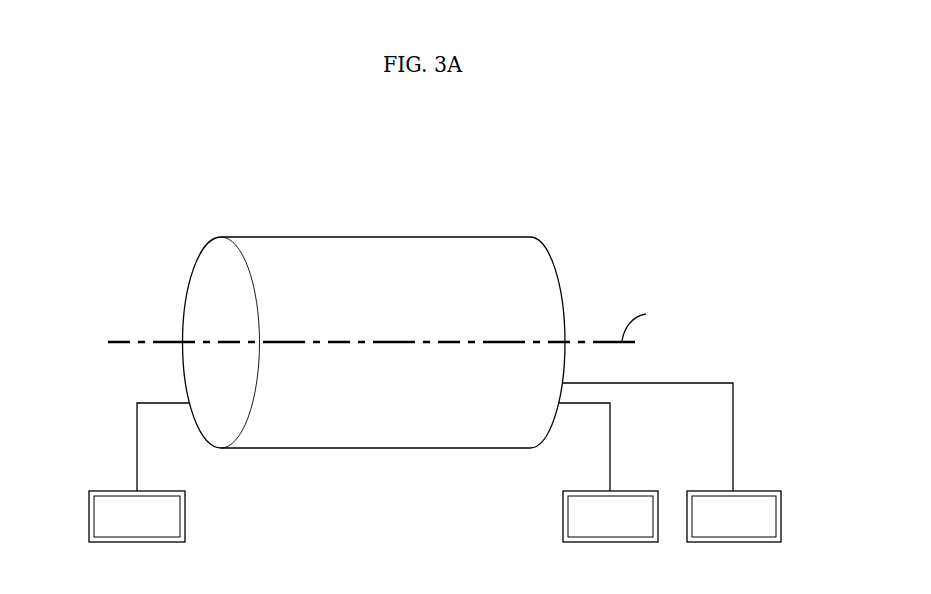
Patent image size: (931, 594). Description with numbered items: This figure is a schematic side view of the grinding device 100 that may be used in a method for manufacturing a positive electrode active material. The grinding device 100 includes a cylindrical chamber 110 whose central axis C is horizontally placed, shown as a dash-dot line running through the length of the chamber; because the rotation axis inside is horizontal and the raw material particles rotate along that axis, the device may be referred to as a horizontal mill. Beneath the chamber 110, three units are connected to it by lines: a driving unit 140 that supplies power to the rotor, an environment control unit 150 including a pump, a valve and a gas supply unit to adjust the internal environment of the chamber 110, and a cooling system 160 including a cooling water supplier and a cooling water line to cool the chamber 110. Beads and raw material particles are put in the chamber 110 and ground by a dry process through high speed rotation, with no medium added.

The grinding device 100 is at (750, 198).
The cylindrical chamber 110 is at (453, 237).
The driving unit 140 is at (139, 472).
The environment control unit 150 is at (608, 472).
The cooling system 160 is at (671, 462).